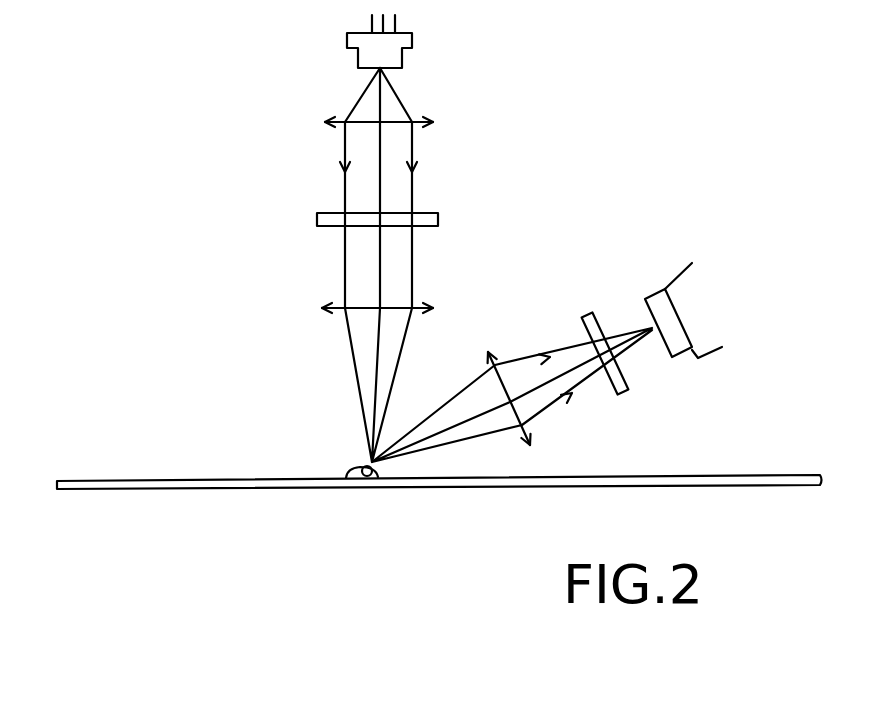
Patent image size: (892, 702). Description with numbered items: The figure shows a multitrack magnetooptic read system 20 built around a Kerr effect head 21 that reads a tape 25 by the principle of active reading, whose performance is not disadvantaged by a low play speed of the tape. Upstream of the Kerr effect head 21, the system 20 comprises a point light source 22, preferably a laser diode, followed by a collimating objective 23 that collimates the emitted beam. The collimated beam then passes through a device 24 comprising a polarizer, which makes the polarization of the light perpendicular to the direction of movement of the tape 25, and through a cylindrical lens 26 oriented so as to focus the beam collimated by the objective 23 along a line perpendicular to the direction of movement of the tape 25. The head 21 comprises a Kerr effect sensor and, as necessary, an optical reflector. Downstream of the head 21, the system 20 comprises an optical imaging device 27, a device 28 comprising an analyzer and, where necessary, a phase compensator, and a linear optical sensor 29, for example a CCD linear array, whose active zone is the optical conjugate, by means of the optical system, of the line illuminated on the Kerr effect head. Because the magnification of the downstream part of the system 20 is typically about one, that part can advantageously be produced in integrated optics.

The multitrack magnetooptic read system 20 is at (640, 78).
The Kerr effect head 21 is at (347, 470).
The point light source 22 is at (407, 50).
The collimating objective 23 is at (432, 117).
The polarizer device 24 is at (440, 220).
The tape 25 is at (158, 485).
The cylindrical lens 26 is at (432, 307).
The optical imaging device 27 is at (500, 360).
The analyzer device 28 is at (587, 317).
The linear optical sensor 29 is at (670, 315).